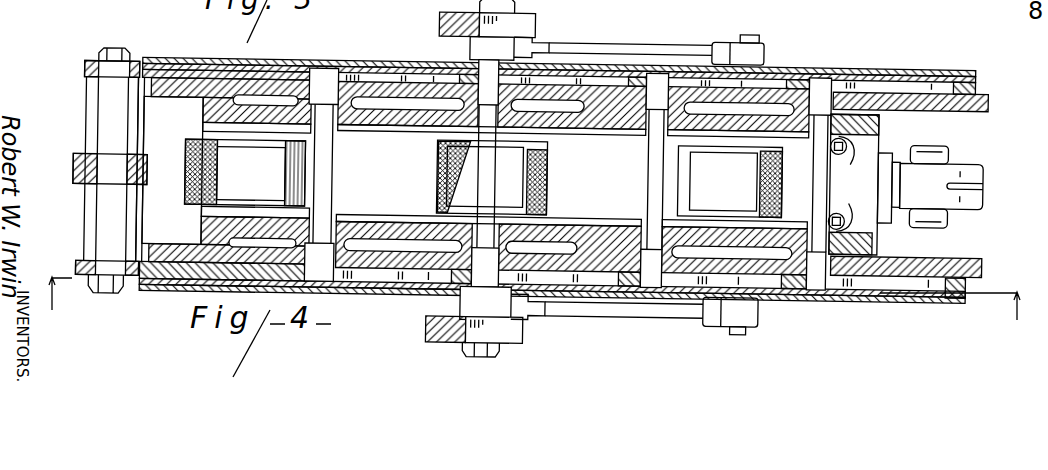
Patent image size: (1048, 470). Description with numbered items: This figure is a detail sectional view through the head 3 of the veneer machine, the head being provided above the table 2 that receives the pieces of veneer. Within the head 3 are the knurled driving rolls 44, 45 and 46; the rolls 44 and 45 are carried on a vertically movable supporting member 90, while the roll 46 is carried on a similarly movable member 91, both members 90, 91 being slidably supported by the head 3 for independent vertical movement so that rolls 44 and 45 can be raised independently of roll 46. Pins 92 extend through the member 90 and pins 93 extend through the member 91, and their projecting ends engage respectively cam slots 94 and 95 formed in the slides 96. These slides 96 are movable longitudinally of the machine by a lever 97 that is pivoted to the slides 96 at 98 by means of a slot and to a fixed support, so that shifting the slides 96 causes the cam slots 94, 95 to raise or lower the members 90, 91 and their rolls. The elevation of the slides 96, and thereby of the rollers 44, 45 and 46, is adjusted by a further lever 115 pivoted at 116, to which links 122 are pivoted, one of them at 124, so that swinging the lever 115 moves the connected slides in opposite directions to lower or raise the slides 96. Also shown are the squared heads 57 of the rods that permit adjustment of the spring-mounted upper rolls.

The table 2 is at (540, 317).
The head 3 is at (980, 110).
The knurled driving roll 44 is at (187, 205).
The knurled driving roll 45 is at (440, 177).
The knurled driving roll 46 is at (775, 163).
The squared head 57 is at (836, 214).
The vertically movable supporting member 90 is at (395, 233).
The vertically movable member 91 is at (867, 257).
The pins 92 is at (325, 63).
The pins 93 is at (656, 77).
The cam slots 94 is at (370, 278).
The cam slots 95 is at (740, 284).
The slides 96 is at (143, 67).
The lever 97 is at (87, 175).
The pivot 98 is at (112, 47).
The lever 115 is at (440, 28).
The pivot 116 is at (483, 355).
The links 122 is at (600, 50).
The pivot 124 is at (750, 36).